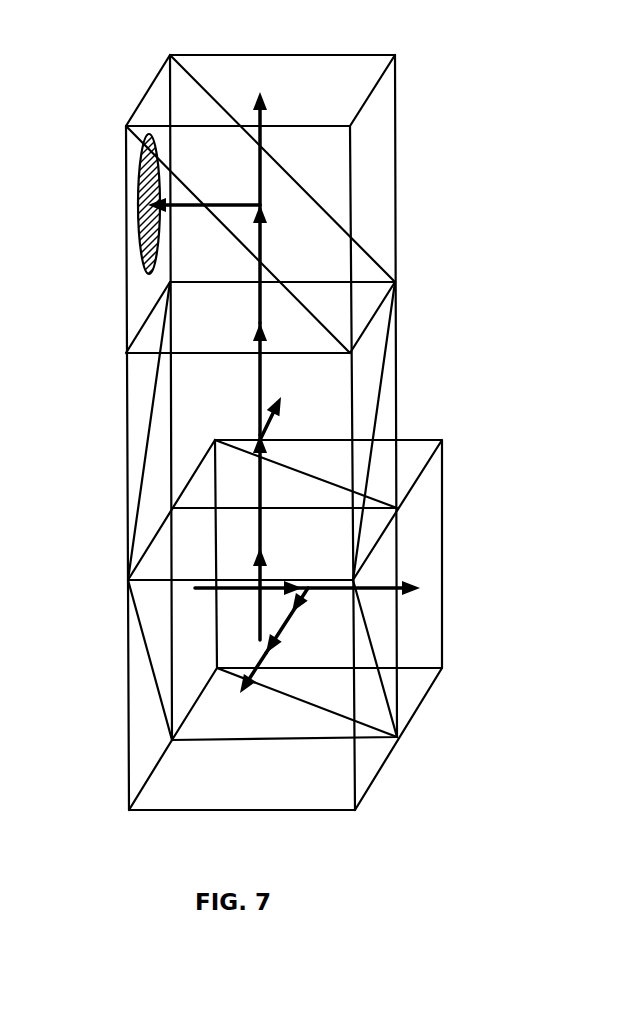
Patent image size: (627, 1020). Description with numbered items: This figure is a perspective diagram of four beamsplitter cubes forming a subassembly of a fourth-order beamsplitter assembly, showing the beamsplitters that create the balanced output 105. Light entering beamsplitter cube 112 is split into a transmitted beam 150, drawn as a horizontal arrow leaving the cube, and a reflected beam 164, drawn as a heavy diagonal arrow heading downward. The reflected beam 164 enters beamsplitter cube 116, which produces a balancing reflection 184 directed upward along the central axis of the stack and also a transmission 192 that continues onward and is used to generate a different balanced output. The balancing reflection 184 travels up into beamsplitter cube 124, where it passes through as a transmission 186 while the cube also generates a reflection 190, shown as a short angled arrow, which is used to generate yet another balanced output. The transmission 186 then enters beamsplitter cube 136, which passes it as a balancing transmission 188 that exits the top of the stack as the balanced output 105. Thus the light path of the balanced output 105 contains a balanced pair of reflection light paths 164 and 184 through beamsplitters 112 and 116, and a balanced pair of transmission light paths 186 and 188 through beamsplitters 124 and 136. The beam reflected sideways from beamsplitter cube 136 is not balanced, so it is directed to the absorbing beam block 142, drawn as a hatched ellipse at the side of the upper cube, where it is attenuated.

The balanced output 105 is at (262, 90).
The beamsplitter cube 112 is at (442, 463).
The beamsplitter cube 116 is at (377, 772).
The beamsplitter cube 124 is at (397, 352).
The beamsplitter cube 136 is at (397, 198).
The absorbing beam block 142 is at (138, 220).
The transmitted beam 150 is at (414, 588).
The reflected beam 164 is at (300, 611).
The balancing reflection 184 is at (262, 613).
The transmission 186 is at (262, 383).
The balancing transmission 188 is at (262, 182).
The reflection 190 is at (283, 398).
The transmission 192 is at (240, 696).